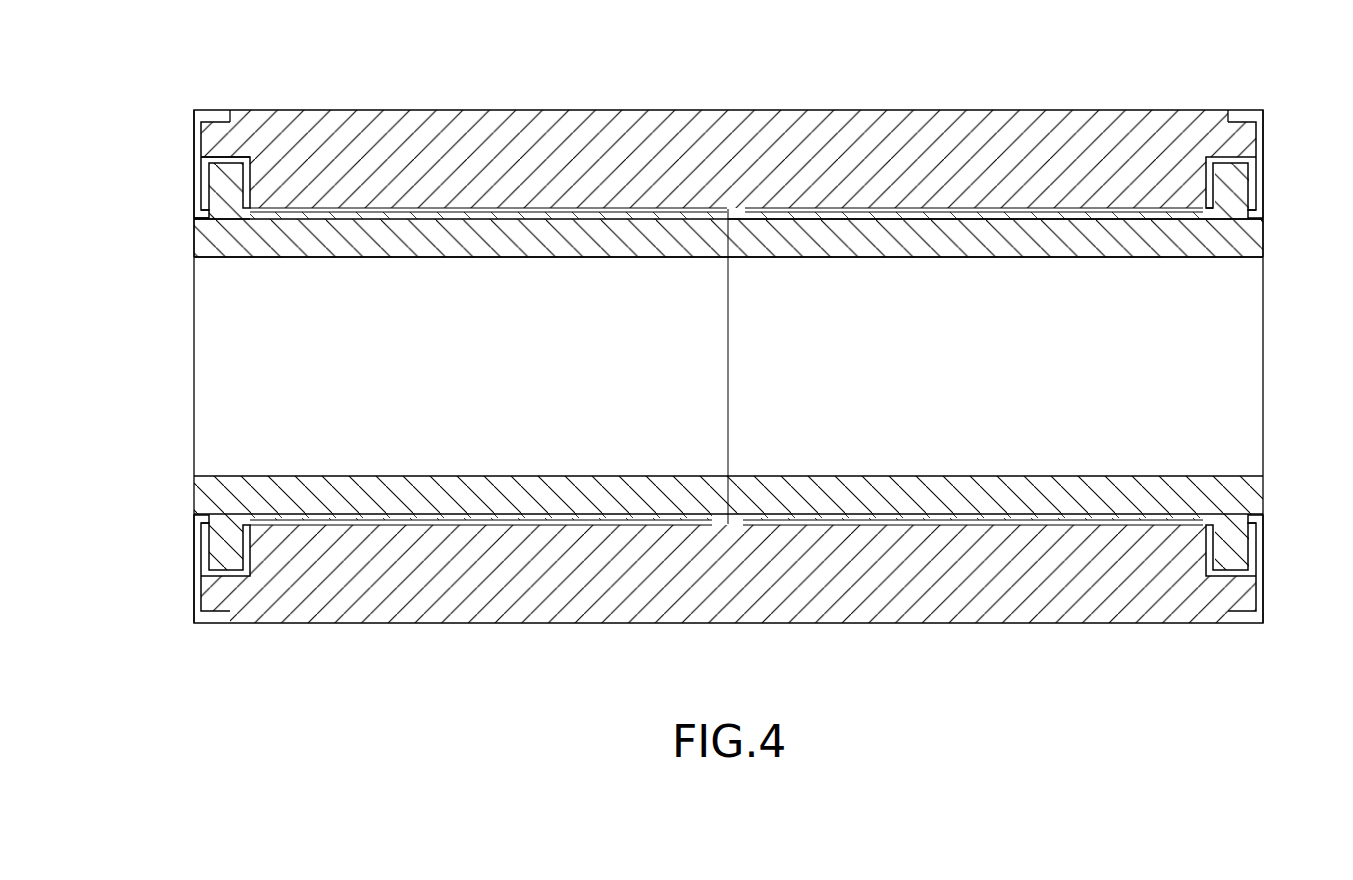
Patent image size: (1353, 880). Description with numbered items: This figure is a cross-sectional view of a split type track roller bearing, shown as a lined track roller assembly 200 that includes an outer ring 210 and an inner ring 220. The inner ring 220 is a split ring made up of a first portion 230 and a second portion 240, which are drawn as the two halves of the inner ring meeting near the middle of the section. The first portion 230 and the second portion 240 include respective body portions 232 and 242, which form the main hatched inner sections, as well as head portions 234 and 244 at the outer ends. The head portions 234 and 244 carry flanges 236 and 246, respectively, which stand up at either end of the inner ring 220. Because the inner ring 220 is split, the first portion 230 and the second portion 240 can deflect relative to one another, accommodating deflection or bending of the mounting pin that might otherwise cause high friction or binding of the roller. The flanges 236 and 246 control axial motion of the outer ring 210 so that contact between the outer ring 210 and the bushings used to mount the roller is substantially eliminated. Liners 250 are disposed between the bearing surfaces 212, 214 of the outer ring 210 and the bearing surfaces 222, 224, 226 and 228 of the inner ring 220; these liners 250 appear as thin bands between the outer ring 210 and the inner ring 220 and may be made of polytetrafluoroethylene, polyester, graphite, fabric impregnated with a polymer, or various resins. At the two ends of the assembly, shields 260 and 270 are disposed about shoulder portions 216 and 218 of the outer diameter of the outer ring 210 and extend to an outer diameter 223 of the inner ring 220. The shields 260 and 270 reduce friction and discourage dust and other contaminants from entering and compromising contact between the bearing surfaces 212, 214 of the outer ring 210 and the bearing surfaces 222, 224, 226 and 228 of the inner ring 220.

The lined track roller assembly 200 is at (740, 661).
The outer ring 210 is at (731, 208).
The bearing surface 212 is at (347, 132).
The bearing surface 214 is at (748, 210).
The shoulder portion 216 is at (228, 111).
The shoulder portion 218 is at (1231, 112).
The inner ring 220 is at (172, 278).
The bearing surface 222 is at (288, 230).
The outer diameter 223 is at (197, 216).
The bearing surface 224 is at (722, 207).
The bearing surface 226 is at (780, 153).
The bearing surface 228 is at (1212, 212).
The first portion 230 is at (196, 233).
The body portion 232 is at (471, 259).
The head portion 234 is at (249, 156).
The flange 236 is at (200, 190).
The second portion 240 is at (1266, 237).
The body portion 242 is at (908, 259).
The head portion 244 is at (1264, 141).
The flange 246 is at (1265, 194).
The liners 250 is at (248, 207).
The shield 260 is at (195, 144).
The shield 270 is at (1265, 554).